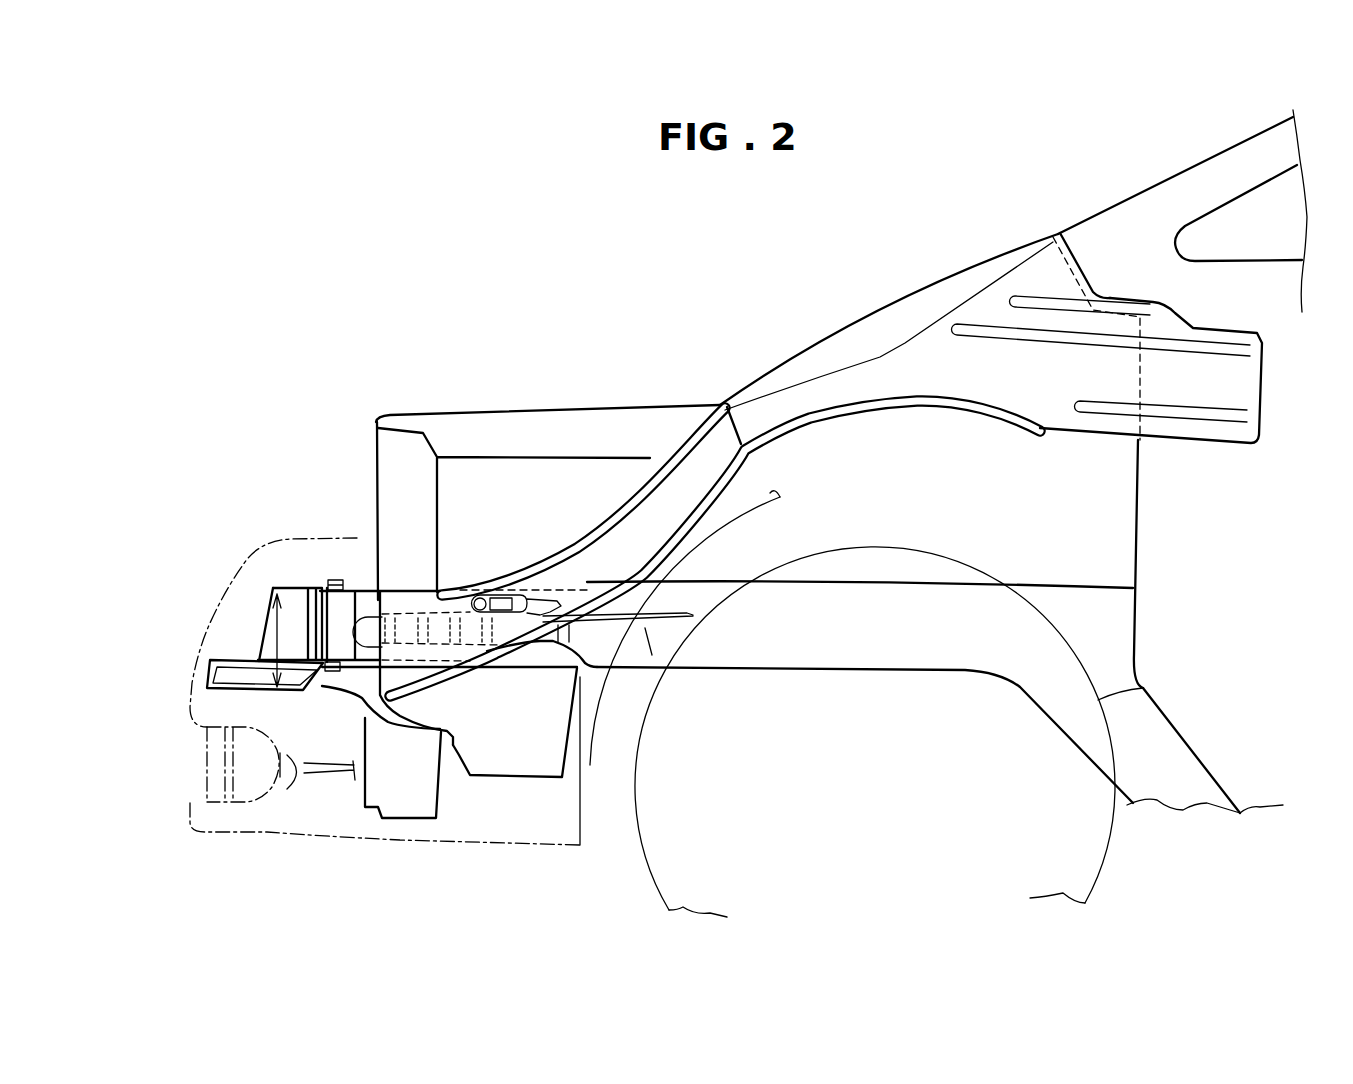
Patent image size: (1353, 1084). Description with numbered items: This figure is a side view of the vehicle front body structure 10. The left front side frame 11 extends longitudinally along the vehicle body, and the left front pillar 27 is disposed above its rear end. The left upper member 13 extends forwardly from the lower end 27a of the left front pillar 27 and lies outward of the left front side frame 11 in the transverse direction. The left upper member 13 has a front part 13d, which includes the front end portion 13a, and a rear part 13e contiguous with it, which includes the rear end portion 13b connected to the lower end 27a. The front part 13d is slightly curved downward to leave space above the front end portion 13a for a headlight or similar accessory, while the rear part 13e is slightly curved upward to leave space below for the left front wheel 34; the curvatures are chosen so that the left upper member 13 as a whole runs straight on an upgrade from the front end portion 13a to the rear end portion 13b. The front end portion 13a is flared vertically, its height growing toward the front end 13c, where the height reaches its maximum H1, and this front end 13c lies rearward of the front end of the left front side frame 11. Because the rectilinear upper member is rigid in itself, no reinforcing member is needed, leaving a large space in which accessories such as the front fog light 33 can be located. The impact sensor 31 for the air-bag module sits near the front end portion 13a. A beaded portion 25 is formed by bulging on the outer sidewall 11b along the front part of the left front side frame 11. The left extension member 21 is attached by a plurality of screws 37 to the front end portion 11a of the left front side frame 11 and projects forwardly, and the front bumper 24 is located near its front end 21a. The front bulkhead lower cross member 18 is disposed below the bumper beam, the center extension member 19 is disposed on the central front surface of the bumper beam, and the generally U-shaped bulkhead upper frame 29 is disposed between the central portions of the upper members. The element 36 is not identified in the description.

The vehicle front body structure 10 is at (491, 254).
The left front side frame 11 is at (834, 684).
The front end portion of left front side frame 11a is at (358, 600).
The outer sidewall of left front side frame 11b is at (718, 668).
The left upper member 13 is at (763, 355).
The front end portion of left upper member 13a is at (410, 595).
The rear end portion of left upper member 13b is at (1053, 233).
The front end of front end portion 13c is at (378, 680).
The front part of left upper member 13d is at (580, 552).
The rear part of left upper member 13e is at (840, 397).
The front bulkhead lower cross member 18 is at (405, 820).
The center extension member 19 is at (210, 663).
The left extension member 21 is at (290, 586).
The front end of left extension member 21a is at (268, 640).
The front bumper 24 is at (190, 690).
The beaded portion 25 is at (542, 641).
The left front pillar 27 is at (1203, 167).
The lower end of left front pillar 27a is at (1085, 227).
The bulkhead upper frame 29 is at (540, 420).
The impact sensor 31 is at (505, 614).
The front fog light 33 is at (203, 772).
The left front wheel 34 is at (1143, 690).
The bolt 36 is at (331, 758).
The screws 37 is at (333, 580).
The maximum height H1 is at (275, 655).